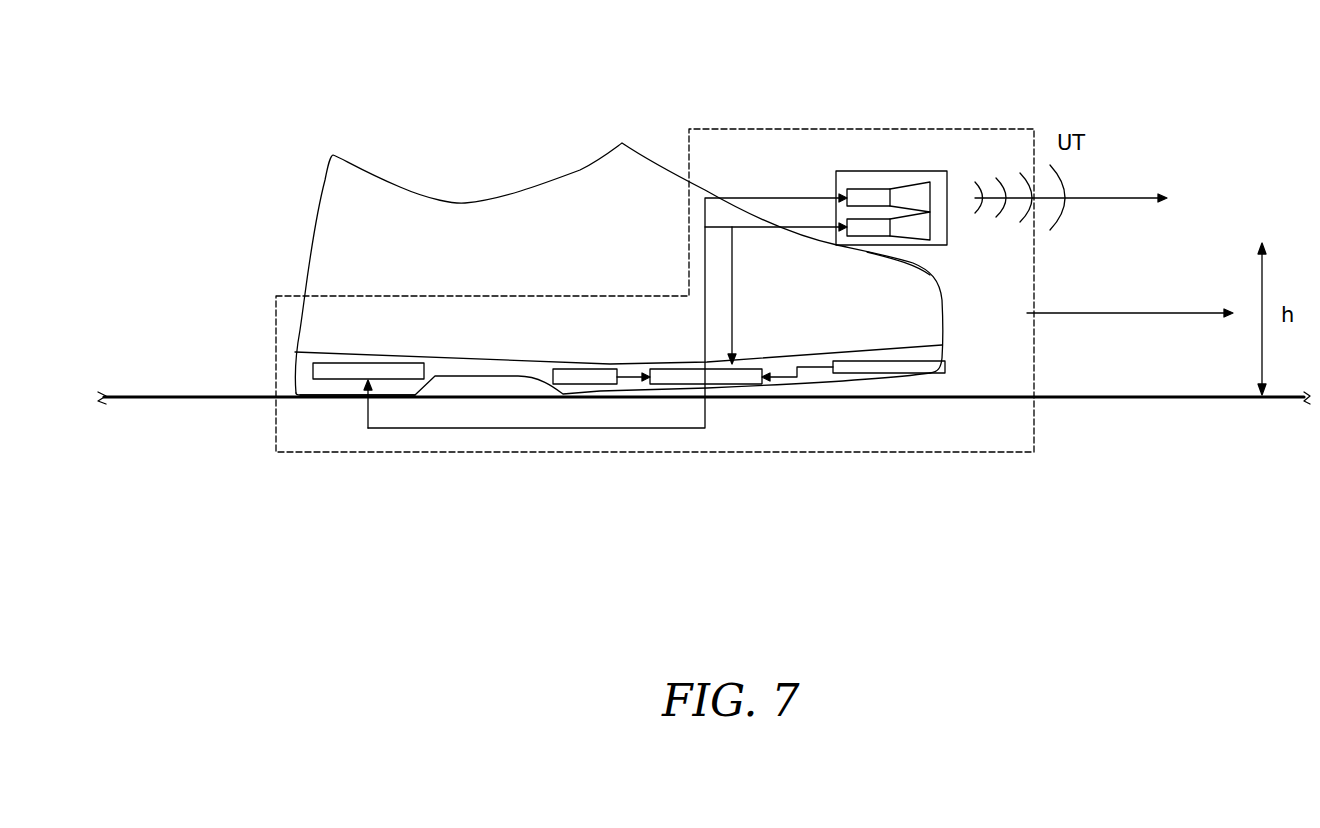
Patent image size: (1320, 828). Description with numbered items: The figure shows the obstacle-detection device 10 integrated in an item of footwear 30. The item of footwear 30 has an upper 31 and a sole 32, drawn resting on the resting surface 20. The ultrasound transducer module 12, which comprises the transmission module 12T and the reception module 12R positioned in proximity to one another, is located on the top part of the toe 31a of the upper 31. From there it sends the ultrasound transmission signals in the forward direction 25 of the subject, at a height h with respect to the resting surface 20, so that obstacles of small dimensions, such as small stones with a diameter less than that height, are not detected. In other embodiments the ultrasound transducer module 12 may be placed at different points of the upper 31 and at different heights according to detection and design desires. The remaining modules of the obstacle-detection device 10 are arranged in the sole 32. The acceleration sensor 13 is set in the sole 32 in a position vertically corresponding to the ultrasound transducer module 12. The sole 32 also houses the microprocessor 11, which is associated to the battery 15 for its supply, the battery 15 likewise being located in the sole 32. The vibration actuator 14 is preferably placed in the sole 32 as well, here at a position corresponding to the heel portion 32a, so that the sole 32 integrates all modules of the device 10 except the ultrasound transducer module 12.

The item of footwear 30 is at (610, 268).
The obstacle-detection device 10 is at (610, 291).
The upper 31 is at (648, 158).
The toe 31a is at (930, 272).
The sole 32 is at (548, 380).
The heel portion 32a is at (343, 385).
The ultrasound transducer module 12 is at (868, 175).
The transmission module 12T is at (870, 189).
The reception module 12R is at (868, 236).
The vibration actuator 14 is at (343, 370).
The battery 15 is at (563, 373).
The microprocessor 11 is at (740, 378).
The acceleration sensor 13 is at (880, 368).
The forward direction 25 is at (1132, 315).
The resting surface 20 is at (1158, 395).